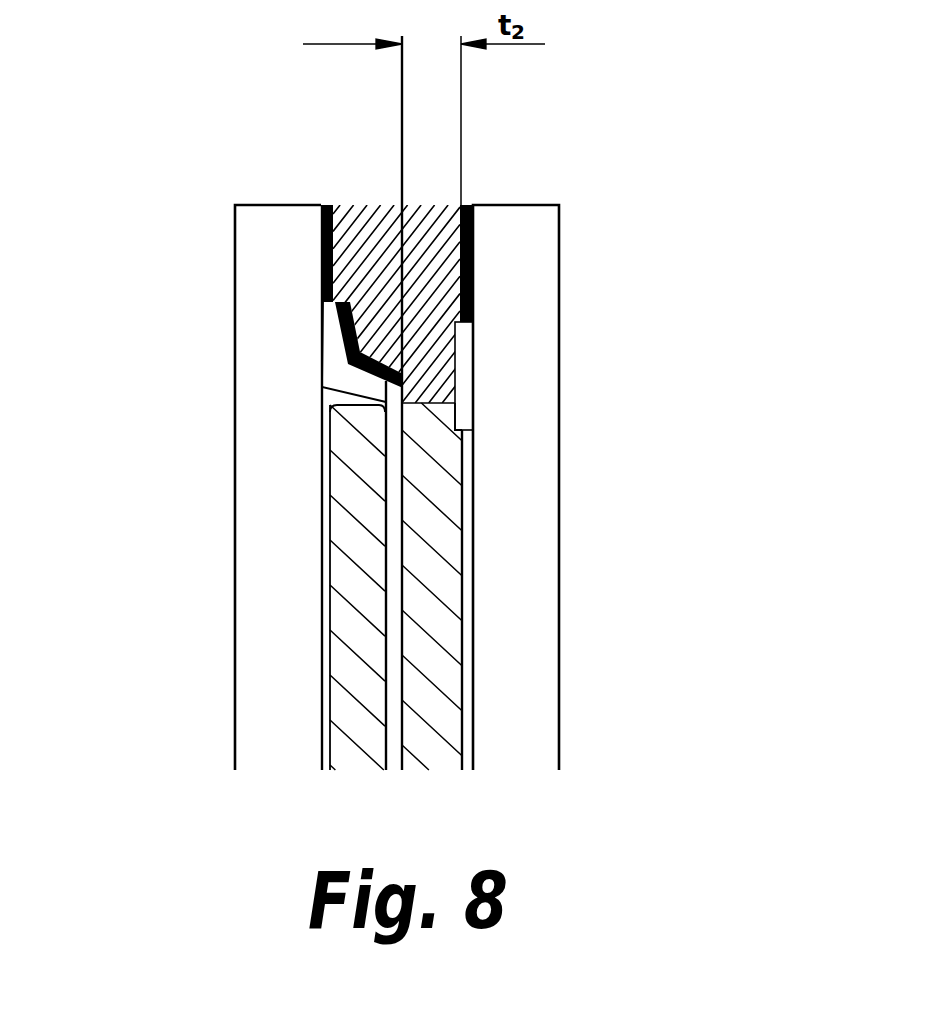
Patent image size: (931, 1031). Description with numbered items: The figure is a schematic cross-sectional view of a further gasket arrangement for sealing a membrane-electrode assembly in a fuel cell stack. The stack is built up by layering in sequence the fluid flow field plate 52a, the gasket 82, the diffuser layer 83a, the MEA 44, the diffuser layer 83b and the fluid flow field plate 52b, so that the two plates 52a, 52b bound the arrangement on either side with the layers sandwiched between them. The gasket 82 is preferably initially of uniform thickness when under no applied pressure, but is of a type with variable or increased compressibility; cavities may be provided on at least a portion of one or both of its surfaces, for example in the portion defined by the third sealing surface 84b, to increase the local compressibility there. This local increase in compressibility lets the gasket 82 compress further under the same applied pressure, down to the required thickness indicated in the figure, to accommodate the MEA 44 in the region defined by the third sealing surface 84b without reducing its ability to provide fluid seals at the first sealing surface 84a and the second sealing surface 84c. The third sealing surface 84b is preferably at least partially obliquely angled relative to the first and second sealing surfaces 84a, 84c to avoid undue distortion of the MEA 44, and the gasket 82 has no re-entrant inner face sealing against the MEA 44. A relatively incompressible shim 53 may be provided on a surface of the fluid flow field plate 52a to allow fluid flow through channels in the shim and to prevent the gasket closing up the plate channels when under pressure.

The MEA 44 is at (392, 717).
The fluid flow field plate 52a is at (552, 310).
The fluid flow field plate 52b is at (309, 310).
The shim 53 is at (460, 362).
The gasket 82 is at (427, 213).
The diffuser layer 83a is at (428, 619).
The diffuser layer 83b is at (362, 603).
The first sealing surface 84a is at (474, 209).
The third sealing surface 84b is at (346, 300).
The second sealing surface 84c is at (321, 205).